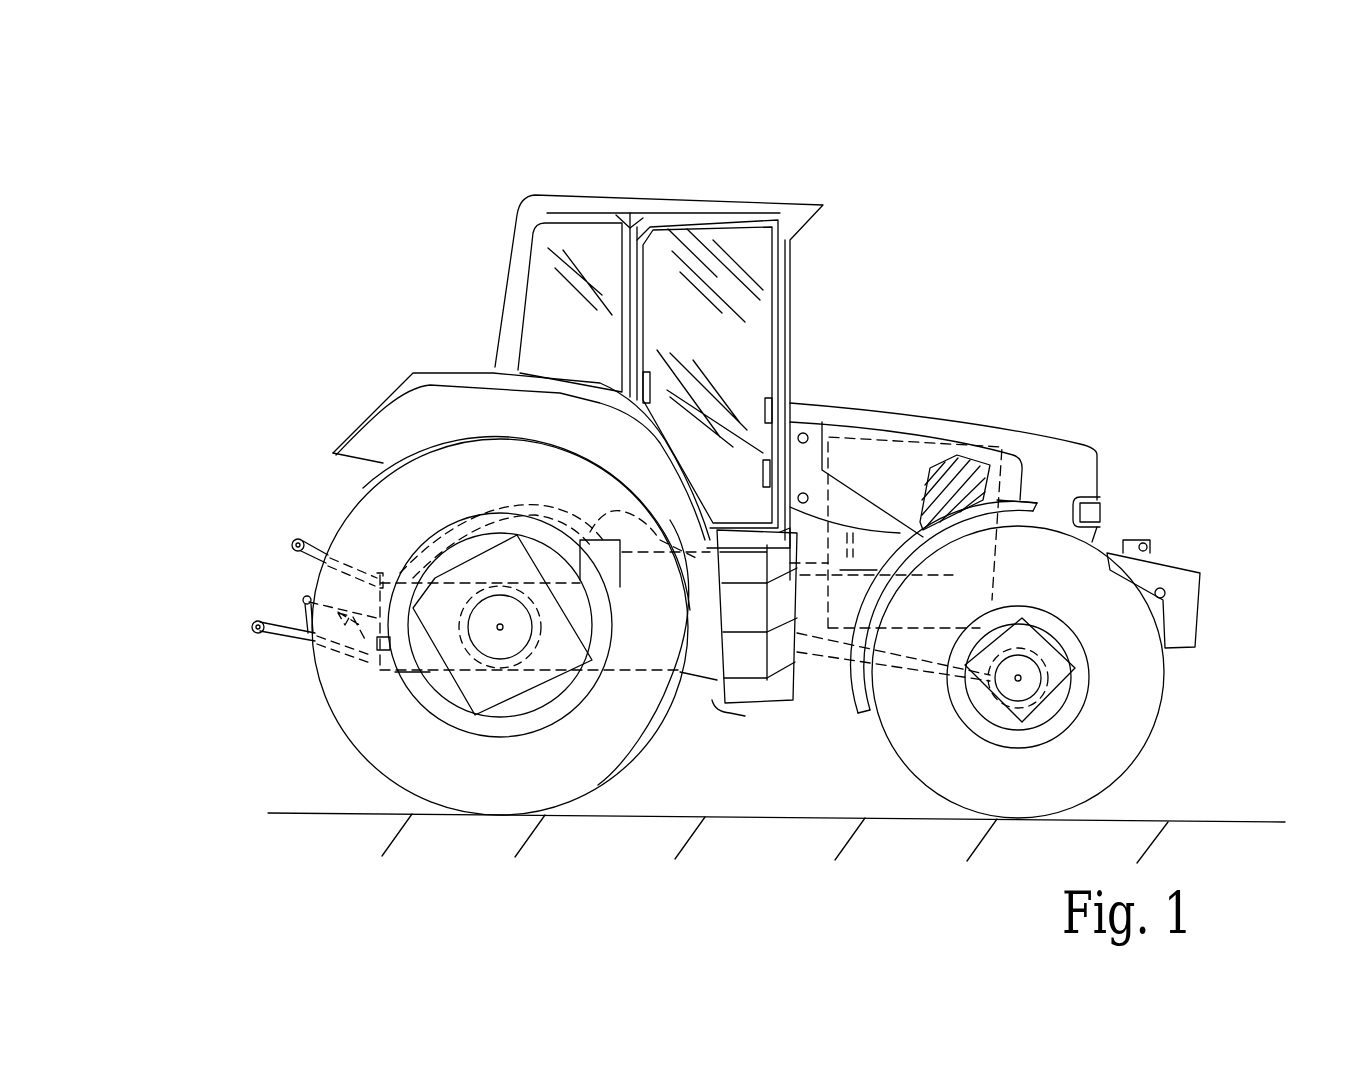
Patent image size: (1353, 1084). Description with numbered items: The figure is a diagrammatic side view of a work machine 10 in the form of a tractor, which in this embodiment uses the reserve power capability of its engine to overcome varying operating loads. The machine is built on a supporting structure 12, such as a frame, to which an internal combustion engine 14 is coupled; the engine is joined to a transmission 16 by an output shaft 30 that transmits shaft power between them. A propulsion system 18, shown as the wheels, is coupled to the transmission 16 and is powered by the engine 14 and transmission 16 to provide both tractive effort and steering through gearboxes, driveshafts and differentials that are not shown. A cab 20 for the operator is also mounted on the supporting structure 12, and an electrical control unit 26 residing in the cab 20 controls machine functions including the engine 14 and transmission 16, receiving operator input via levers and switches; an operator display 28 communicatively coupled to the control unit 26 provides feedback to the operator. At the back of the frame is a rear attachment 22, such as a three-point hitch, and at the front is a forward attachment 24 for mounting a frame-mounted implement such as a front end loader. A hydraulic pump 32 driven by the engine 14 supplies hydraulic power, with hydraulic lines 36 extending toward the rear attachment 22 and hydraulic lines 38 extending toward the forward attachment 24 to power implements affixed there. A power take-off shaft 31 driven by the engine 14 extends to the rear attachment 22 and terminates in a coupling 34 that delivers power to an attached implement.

The work machine 10 is at (993, 142).
The supporting structure 12 is at (740, 716).
The internal combustion engine 14 is at (805, 490).
The transmission 16 is at (633, 672).
The propulsion system 18 is at (468, 688).
The cab 20 is at (689, 344).
The rear attachment 22 is at (207, 546).
The forward attachment 24 is at (805, 492).
The electrical control unit 26 is at (805, 432).
The operator display 28 is at (763, 387).
The output shaft 30 is at (817, 530).
The power take-off shaft 31 is at (395, 672).
The hydraulic pump 32 is at (520, 527).
The coupling 34 is at (360, 663).
The hydraulic lines 36 is at (467, 433).
The hydraulic lines 38 is at (647, 523).